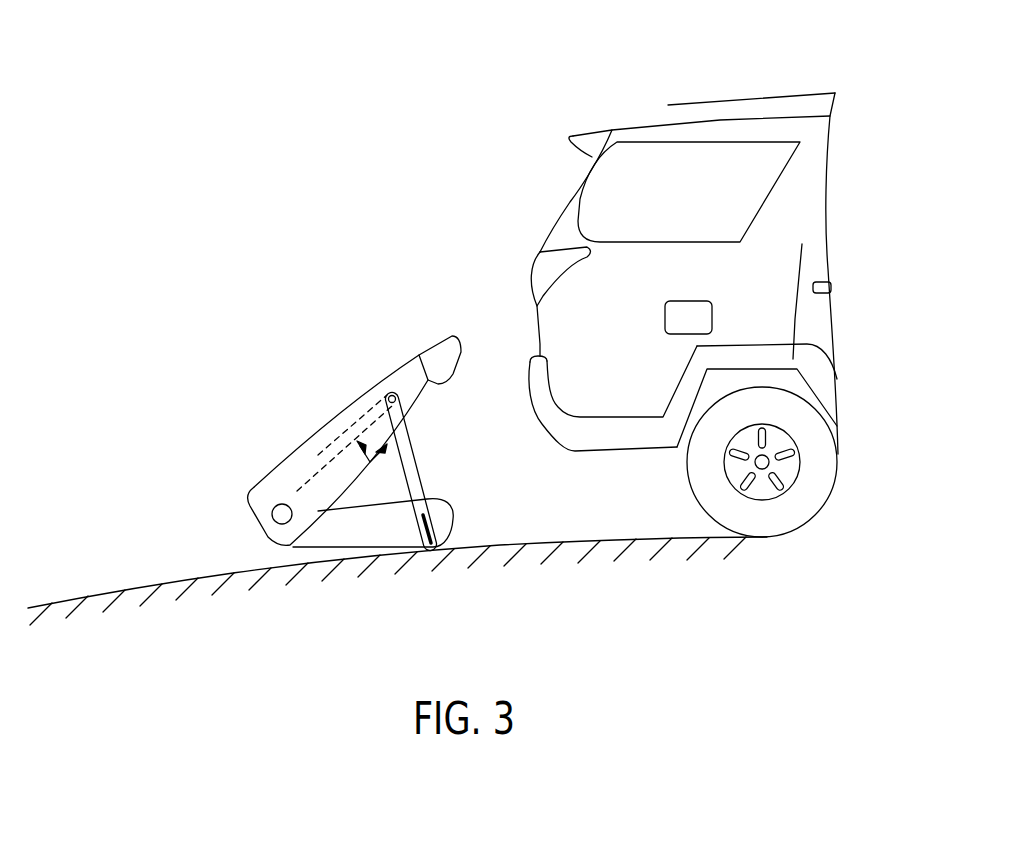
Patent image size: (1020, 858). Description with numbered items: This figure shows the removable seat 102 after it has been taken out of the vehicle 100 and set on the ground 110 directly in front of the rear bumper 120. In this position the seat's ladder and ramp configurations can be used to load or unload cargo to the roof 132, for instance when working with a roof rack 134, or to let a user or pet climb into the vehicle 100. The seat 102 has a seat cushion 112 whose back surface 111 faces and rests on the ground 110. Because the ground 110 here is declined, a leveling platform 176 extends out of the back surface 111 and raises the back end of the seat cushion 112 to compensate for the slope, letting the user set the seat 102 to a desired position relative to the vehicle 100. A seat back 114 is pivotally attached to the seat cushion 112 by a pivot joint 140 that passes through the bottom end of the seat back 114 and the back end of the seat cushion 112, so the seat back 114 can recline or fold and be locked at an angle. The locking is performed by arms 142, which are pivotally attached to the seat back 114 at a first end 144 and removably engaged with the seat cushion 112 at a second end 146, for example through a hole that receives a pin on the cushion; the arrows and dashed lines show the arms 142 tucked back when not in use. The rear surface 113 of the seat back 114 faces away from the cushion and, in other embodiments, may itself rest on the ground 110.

The vehicle 100 is at (660, 272).
The removable seat 102 is at (293, 367).
The ground 110 is at (190, 578).
The back surface of the seat cushion 111 is at (347, 555).
The seat cushion 112 is at (373, 535).
The rear surface of the seat back 113 is at (282, 455).
The seat back 114 is at (292, 501).
The rear bumper 120 is at (530, 388).
The roof 132 is at (627, 127).
The roof rack 134 is at (667, 106).
The pivot joint 140 is at (256, 503).
The locking member (arm) 142 is at (418, 467).
The first end of the arm 144 is at (390, 396).
The second end of the arm 146 is at (432, 528).
The leveling platform 176 is at (385, 565).